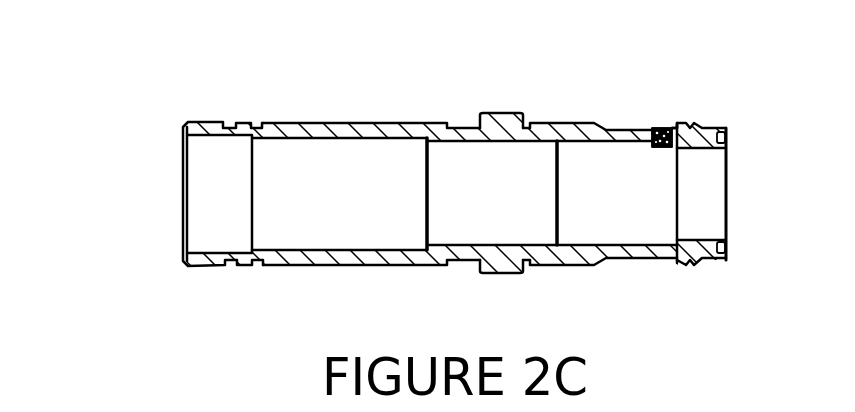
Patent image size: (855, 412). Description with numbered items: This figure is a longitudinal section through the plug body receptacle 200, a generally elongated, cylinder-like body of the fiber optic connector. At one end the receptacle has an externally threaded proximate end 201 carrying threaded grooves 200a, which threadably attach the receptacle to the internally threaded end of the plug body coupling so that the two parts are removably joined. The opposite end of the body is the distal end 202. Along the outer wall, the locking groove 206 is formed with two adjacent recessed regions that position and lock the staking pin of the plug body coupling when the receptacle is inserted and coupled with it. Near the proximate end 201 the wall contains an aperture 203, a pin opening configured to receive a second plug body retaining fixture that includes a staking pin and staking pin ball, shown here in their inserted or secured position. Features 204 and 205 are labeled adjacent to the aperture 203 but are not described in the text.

The plug body receptacle 200 is at (127, 110).
The threaded grooves 200a is at (728, 210).
The proximate end 201 is at (693, 130).
The distal end 202 is at (233, 127).
The aperture 203 is at (653, 131).
The seal groove 204 is at (659, 130).
The lip 205 is at (661, 131).
The locking groove 206 is at (462, 130).